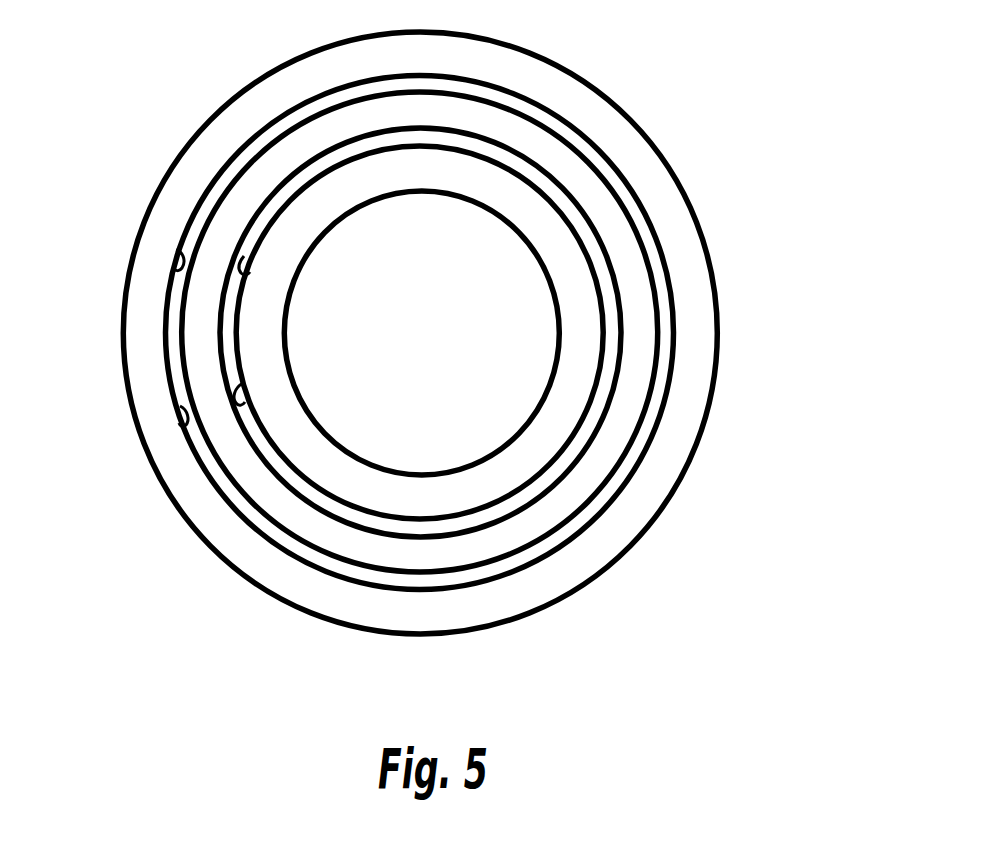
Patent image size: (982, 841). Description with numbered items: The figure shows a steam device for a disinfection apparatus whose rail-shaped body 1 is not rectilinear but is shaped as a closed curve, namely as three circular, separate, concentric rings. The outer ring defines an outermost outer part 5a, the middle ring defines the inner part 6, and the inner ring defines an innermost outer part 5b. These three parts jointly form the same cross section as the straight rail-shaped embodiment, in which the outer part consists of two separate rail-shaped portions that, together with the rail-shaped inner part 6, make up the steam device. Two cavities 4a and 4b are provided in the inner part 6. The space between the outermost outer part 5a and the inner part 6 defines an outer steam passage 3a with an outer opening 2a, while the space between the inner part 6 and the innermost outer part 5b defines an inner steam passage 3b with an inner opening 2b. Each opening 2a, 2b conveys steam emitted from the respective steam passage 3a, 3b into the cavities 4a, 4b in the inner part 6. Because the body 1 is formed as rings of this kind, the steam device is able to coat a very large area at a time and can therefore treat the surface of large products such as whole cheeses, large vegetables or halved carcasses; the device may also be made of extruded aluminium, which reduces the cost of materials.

The rail-shaped body 1 is at (724, 327).
The outer opening 2a is at (176, 250).
The inner opening 2b is at (244, 256).
The outer steam passage 3a is at (180, 406).
The steam passage 3b is at (238, 378).
The cavity 4a is at (180, 333).
The cavity 4b is at (220, 328).
The outermost outer part 5a is at (670, 187).
The innermost outer part 5b is at (537, 233).
The inner part 6 is at (575, 167).